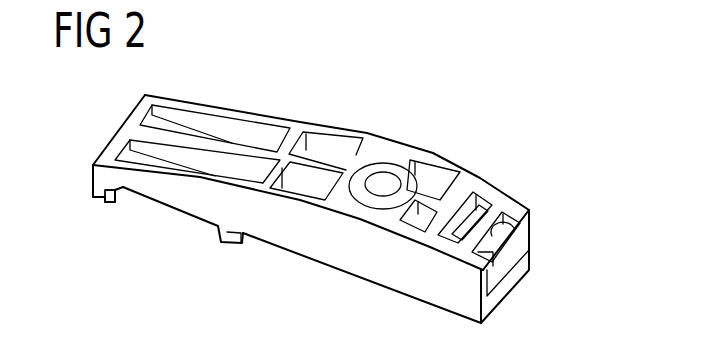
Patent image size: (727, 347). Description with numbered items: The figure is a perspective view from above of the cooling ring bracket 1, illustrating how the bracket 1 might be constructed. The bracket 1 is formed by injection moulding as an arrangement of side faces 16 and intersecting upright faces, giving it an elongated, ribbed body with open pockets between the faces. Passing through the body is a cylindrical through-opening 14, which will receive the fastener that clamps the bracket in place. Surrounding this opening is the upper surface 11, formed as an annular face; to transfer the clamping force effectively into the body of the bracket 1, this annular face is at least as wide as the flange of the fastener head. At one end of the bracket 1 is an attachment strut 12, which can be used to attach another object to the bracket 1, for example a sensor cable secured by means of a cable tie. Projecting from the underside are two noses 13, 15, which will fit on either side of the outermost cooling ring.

The cooling ring bracket 1 is at (311, 209).
The upper surface 11 is at (412, 180).
The attachment strut 12 is at (494, 228).
The nose 13 is at (219, 246).
The cylindrical through-opening 14 is at (382, 183).
The nose 15 is at (92, 200).
The side faces 16 is at (241, 130).